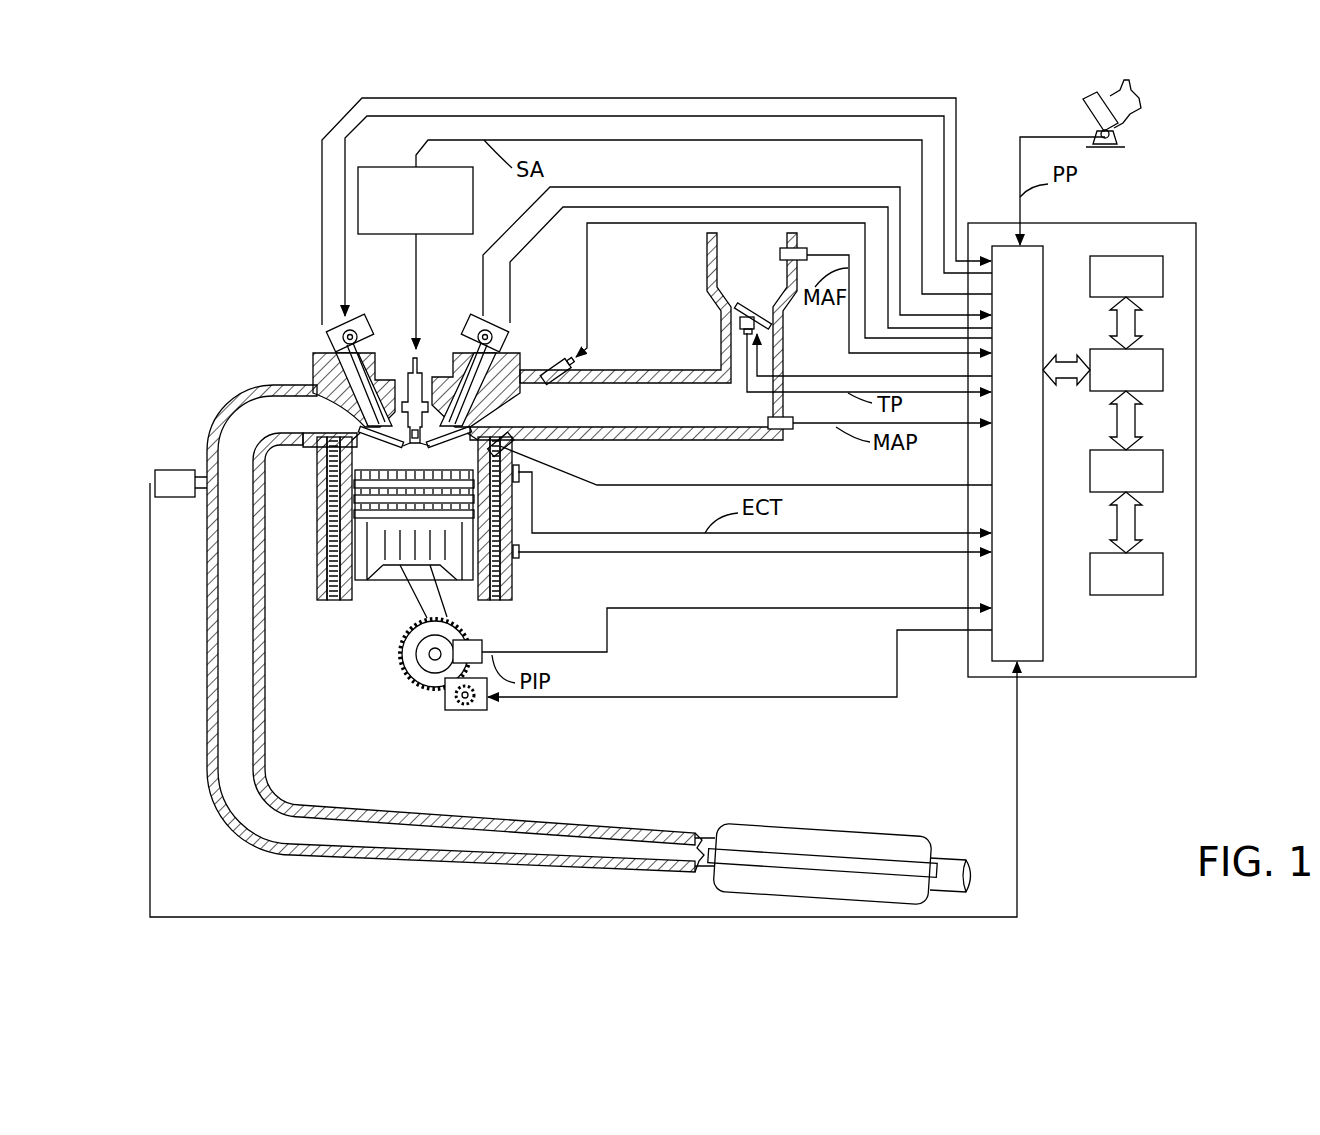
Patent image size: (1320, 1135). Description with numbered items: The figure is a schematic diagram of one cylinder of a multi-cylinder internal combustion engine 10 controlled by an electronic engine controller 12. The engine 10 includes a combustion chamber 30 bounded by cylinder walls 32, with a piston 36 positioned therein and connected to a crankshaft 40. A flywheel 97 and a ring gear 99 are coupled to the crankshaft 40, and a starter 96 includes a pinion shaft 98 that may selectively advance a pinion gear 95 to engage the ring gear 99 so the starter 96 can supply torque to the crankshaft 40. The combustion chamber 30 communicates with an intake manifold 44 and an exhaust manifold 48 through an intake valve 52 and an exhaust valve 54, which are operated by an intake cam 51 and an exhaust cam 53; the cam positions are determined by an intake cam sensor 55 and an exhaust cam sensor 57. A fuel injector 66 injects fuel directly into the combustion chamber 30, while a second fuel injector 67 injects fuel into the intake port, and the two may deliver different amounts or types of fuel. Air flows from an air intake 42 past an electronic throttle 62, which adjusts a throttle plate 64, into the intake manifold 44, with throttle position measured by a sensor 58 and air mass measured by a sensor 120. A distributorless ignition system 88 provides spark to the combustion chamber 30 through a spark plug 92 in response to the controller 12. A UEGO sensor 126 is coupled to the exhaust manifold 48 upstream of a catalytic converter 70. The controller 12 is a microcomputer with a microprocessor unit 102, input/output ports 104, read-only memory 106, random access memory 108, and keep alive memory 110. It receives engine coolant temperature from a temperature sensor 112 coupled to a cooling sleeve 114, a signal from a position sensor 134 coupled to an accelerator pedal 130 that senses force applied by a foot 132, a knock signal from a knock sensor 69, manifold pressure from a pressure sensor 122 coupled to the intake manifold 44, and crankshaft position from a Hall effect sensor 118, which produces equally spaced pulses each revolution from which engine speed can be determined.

The internal combustion engine 10 is at (245, 302).
The electronic engine controller 12 is at (1196, 226).
The combustion chamber 30 is at (413, 462).
The cylinder walls 32 is at (352, 603).
The piston 36 is at (405, 575).
The crankshaft 40 is at (425, 678).
The air intake 42 is at (736, 298).
The intake manifold 44 is at (676, 419).
The exhaust manifold 48 is at (271, 427).
The intake cam 51 is at (478, 312).
The intake valve 52 is at (462, 417).
The exhaust cam 53 is at (352, 312).
The exhaust valve 54 is at (330, 392).
The intake cam sensor 55 is at (493, 342).
The exhaust cam sensor 57 is at (333, 340).
The throttle position sensor 58 is at (728, 340).
The electronic throttle 62 is at (770, 310).
The throttle plate 64 is at (734, 316).
The fuel injector 66 is at (541, 468).
The fuel injector 67 is at (557, 385).
The knock sensor 69 is at (519, 561).
The catalytic converter 70 is at (728, 822).
The distributorless ignition system 88 is at (372, 167).
The spark plug 92 is at (417, 366).
The pinion gear 95 is at (475, 712).
The starter 96 is at (478, 705).
The flywheel 97 is at (410, 650).
The pinion shaft 98 is at (462, 708).
The ring gear 99 is at (432, 690).
The microprocessor unit 102 is at (1163, 362).
The input/output ports 104 is at (1044, 256).
The read-only memory 106 is at (1163, 272).
The random access memory 108 is at (1163, 465).
The keep alive memory 110 is at (1163, 568).
The temperature sensor 112 is at (520, 481).
The cooling sleeve 114 is at (513, 583).
The Hall effect sensor 118 is at (485, 643).
The air mass sensor 120 is at (780, 255).
The pressure sensor 122 is at (793, 430).
The Universal Exhaust Gas Oxygen (UEGO) sensor 126 is at (155, 472).
The accelerator pedal 130 is at (1085, 110).
The foot 132 is at (1137, 95).
The position sensor 134 is at (1116, 138).